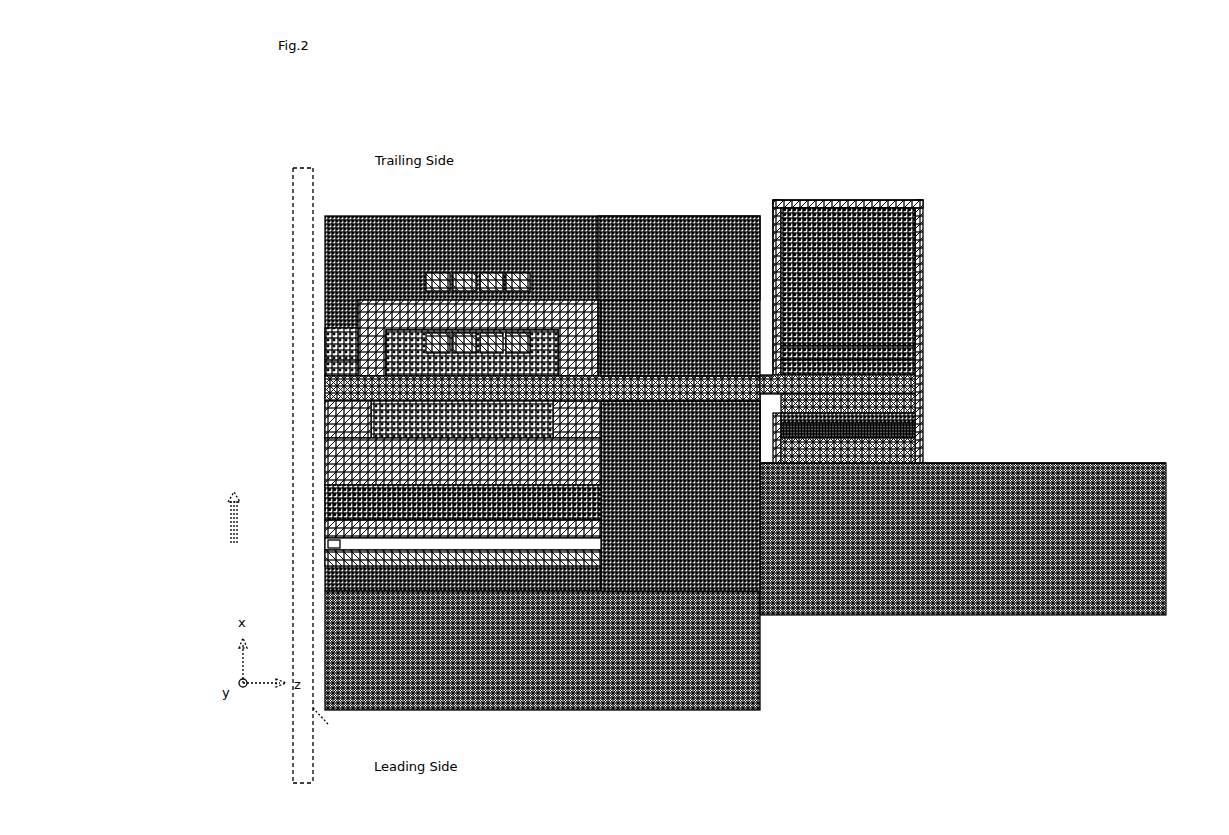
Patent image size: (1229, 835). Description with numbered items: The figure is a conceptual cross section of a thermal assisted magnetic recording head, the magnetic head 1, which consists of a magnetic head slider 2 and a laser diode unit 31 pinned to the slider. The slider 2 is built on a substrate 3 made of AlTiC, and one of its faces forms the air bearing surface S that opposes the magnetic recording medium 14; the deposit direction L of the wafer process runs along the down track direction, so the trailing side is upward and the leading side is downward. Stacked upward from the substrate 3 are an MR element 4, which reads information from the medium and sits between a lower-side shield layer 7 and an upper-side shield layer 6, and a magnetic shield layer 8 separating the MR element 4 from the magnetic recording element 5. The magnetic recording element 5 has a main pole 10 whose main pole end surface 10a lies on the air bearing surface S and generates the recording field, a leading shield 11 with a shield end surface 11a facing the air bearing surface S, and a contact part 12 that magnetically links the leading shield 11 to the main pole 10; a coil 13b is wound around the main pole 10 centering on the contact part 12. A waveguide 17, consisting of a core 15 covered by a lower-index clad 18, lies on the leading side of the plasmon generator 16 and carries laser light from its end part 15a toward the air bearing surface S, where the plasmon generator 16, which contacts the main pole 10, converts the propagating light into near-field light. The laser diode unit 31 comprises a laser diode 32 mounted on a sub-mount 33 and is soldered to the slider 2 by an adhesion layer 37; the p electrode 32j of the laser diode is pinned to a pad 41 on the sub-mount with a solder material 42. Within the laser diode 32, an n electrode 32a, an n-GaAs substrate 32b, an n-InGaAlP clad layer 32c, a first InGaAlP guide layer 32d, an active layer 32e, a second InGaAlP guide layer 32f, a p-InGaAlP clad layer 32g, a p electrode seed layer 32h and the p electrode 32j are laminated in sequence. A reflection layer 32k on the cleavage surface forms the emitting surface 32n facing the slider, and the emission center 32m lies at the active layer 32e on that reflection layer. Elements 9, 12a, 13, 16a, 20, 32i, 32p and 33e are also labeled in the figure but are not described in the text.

The magnetic head 1 is at (623, 95).
The magnetic head slider 2 is at (530, 207).
The substrate 3 is at (752, 625).
The MR element 4 is at (318, 535).
The magnetic recording element 5 is at (244, 373).
The upper-side shield layer 6 is at (318, 516).
The lower-side shield layer 7 is at (318, 552).
The magnetic shield layer 8 is at (318, 493).
The main magnetic pole layer 9 is at (646, 368).
The main pole 10 is at (320, 318).
The main pole end surface 10a is at (318, 352).
The leading shield 11 is at (300, 407).
The shield end surface 11a is at (312, 438).
The contact part 12 is at (600, 302).
The coil upper layer 12a is at (440, 265).
The coil insulating layer 13 is at (472, 353).
The coil 13b is at (400, 290).
The magnetic recording medium 14 is at (292, 220).
The core 15 is at (680, 496).
The end part 15a is at (765, 431).
The plasmon generator 16 is at (462, 402).
The gap layer end face 16a is at (320, 372).
The waveguide 17 is at (654, 367).
The clad 18 is at (680, 378).
The protective layer 20 is at (679, 258).
The laser diode unit 31 is at (898, 172).
The laser diode 32 is at (975, 284).
The n electrode 32a is at (916, 198).
The n-GaAs substrate 32b is at (916, 262).
The n-InGaAlP clad layer 32c is at (914, 346).
The first InGaAlP guide layer 32d is at (914, 362).
The active layer 32e is at (914, 378).
The second InGaAlP guide layer 32f is at (915, 398).
The p-InGaAlP clad layer 32g is at (915, 410).
The p electrode seed layer 32h is at (916, 420).
The heater side wall 32i is at (916, 238).
The p electrode 32j is at (915, 432).
The reflection layer 32k is at (765, 196).
The emission center 32m is at (764, 370).
The emitting surface 32n is at (765, 272).
The heater top face 32p is at (855, 192).
The sub-mount 33 is at (1158, 535).
The slider top face 33e is at (1072, 455).
The adhesion layer 37 is at (760, 568).
The pad 41 is at (760, 456).
The solder material 42 is at (752, 462).
The deposit direction L is at (240, 517).
The air bearing surface S is at (323, 725).